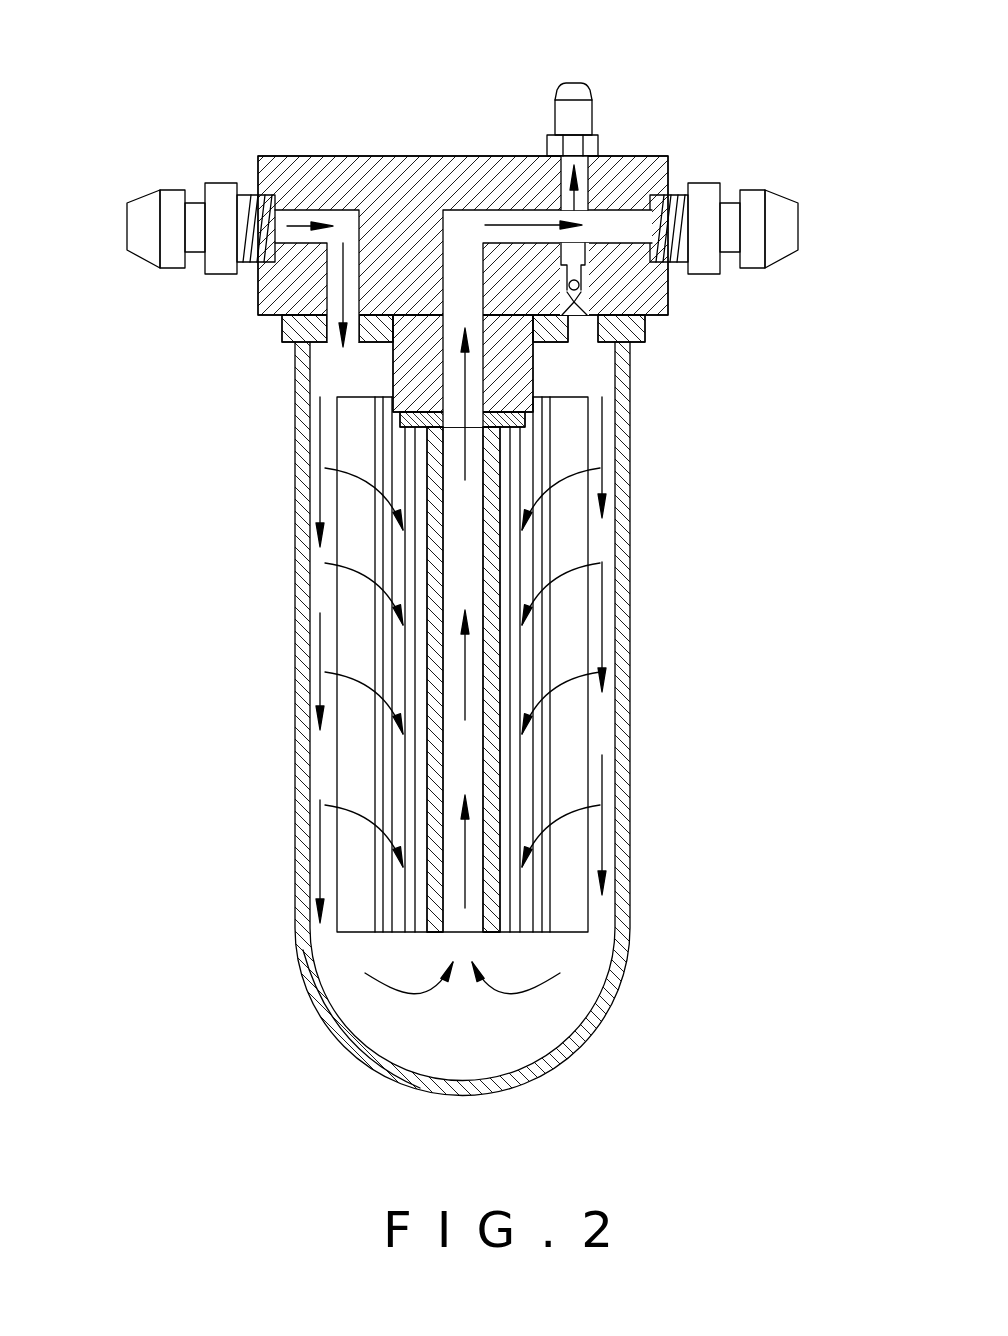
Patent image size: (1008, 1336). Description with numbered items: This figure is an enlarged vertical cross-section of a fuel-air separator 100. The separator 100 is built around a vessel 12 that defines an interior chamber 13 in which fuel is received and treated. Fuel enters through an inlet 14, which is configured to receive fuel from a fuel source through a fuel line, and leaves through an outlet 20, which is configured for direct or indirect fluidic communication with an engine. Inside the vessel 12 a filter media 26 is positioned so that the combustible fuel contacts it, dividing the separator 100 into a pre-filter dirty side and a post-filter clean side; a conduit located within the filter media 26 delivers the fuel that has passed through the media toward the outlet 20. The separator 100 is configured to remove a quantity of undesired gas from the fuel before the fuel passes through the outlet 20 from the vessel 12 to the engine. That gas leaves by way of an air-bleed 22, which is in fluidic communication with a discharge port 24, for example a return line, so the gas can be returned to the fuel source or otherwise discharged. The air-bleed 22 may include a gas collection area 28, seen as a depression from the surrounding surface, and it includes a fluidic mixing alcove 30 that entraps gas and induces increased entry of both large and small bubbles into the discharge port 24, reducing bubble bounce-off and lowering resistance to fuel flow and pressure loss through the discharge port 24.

The fuel-air separator 100 is at (680, 453).
The vessel 12 is at (630, 602).
The interior chamber 13 is at (598, 727).
The inlet 14 is at (137, 258).
The outlet 20 is at (800, 247).
The air-bleed 22 is at (563, 300).
The discharge port 24 is at (582, 82).
The filter media 26 is at (375, 623).
The gas collection area 28 is at (576, 316).
The fluidic mixing alcove 30 is at (562, 300).